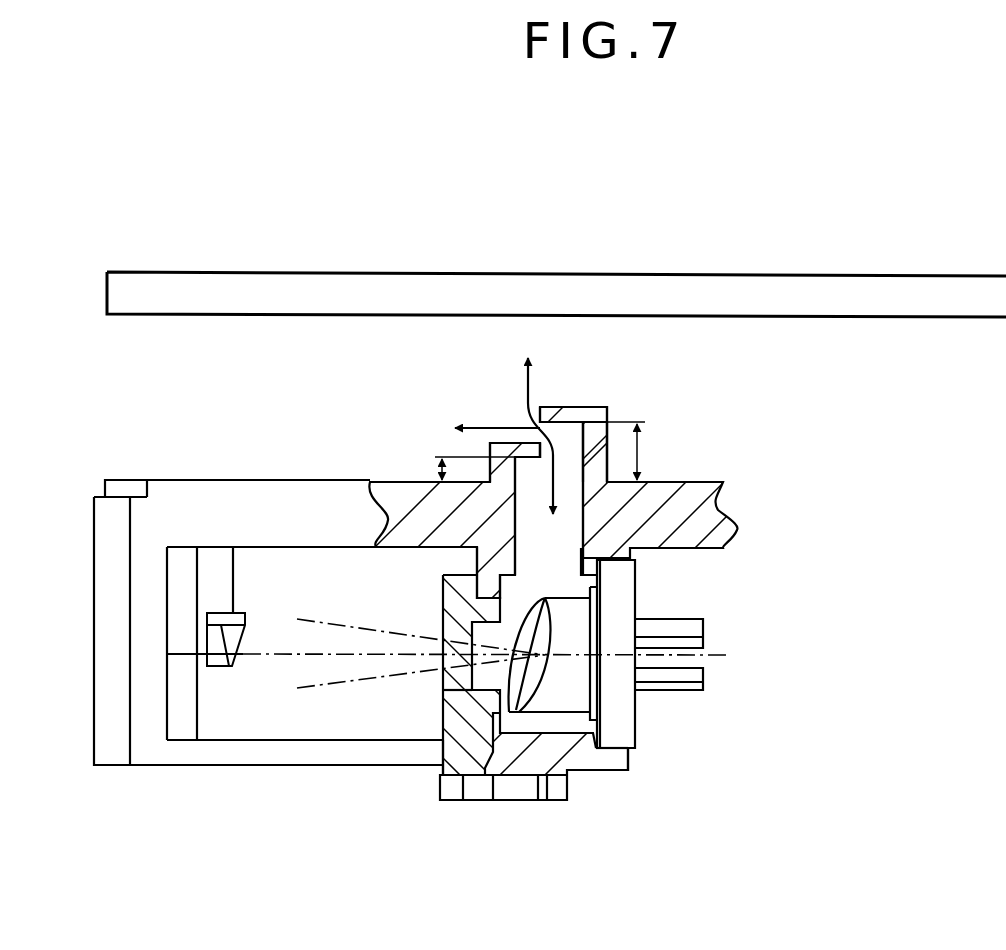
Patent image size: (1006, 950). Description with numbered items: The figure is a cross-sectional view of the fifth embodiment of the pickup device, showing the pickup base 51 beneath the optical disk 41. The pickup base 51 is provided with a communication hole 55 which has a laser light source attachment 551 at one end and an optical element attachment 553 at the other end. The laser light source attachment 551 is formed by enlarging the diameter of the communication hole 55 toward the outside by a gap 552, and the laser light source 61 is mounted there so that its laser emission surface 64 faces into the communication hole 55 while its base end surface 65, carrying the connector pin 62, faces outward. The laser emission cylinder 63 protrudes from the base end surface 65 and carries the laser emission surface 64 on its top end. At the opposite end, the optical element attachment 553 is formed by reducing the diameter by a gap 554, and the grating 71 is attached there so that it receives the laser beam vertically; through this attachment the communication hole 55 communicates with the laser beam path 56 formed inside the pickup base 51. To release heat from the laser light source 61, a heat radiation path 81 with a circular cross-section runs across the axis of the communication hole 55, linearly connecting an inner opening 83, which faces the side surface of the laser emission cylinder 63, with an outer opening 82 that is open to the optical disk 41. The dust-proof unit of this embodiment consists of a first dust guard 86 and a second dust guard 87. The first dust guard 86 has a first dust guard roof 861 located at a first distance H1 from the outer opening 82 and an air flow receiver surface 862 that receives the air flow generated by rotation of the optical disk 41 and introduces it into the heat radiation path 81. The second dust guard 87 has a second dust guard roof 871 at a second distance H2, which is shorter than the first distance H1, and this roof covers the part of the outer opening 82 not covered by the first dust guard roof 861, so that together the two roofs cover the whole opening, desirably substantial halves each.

The optical disk 41 is at (847, 289).
The pickup base 51 is at (705, 505).
The communication hole 55 is at (577, 730).
The laser beam path 56 is at (286, 740).
The laser light source 61 is at (682, 668).
The connector pin 62 is at (697, 673).
The laser emission cylinder 63 is at (580, 618).
The laser emission surface 64 is at (525, 678).
The base end surface 65 is at (625, 703).
The grating 71 is at (460, 737).
The heat radiation path 81 is at (478, 563).
The outer opening 82 is at (575, 473).
The inner opening 83 is at (460, 600).
The first dust guard 86 is at (598, 404).
The first dust guard roof 861 is at (563, 408).
The air flow receiver surface 862 is at (587, 431).
The second dust guard 87 is at (490, 436).
The second dust guard roof 871 is at (528, 450).
The laser light source attachment 551 is at (627, 749).
The gap 552 is at (598, 750).
The optical element attachment 553 is at (470, 705).
The gap 554 is at (485, 800).
The first distance H1 is at (637, 450).
The second distance H2 is at (440, 462).